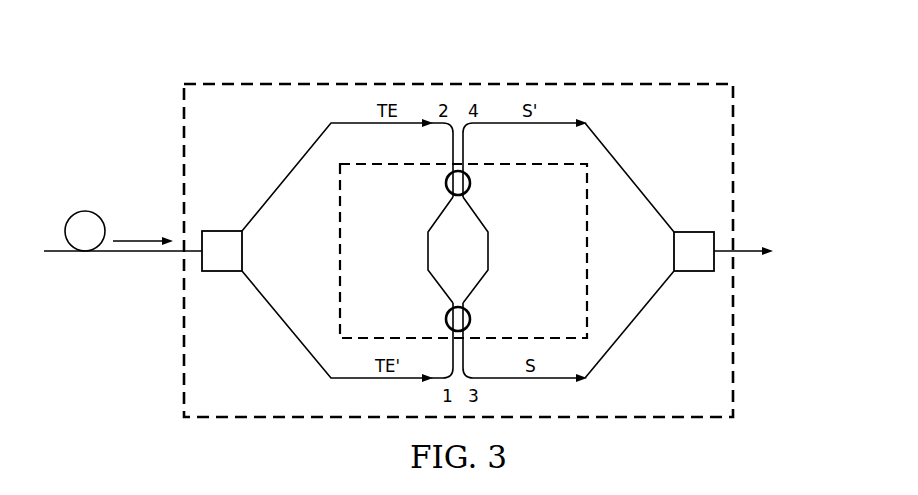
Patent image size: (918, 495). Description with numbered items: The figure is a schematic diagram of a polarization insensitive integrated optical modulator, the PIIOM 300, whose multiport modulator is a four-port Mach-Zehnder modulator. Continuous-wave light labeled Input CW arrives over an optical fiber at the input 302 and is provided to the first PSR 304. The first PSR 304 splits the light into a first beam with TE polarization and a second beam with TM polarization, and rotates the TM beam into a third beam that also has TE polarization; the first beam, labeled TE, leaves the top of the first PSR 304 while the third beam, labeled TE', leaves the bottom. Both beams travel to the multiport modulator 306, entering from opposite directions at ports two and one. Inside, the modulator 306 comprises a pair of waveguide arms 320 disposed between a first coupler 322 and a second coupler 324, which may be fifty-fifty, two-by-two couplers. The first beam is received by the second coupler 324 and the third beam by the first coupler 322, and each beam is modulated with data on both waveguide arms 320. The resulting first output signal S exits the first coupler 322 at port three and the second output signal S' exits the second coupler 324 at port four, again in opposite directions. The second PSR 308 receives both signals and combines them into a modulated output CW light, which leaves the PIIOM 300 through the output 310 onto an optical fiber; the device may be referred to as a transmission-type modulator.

The PIIOM 300 is at (326, 57).
The input 302 is at (177, 256).
The first PSR 304 is at (222, 272).
The multiport modulator 306 is at (332, 262).
The second PSR 308 is at (692, 272).
The output 310 is at (738, 258).
The waveguide arms 320 is at (428, 253).
The first coupler 322 is at (471, 318).
The second coupler 324 is at (471, 186).